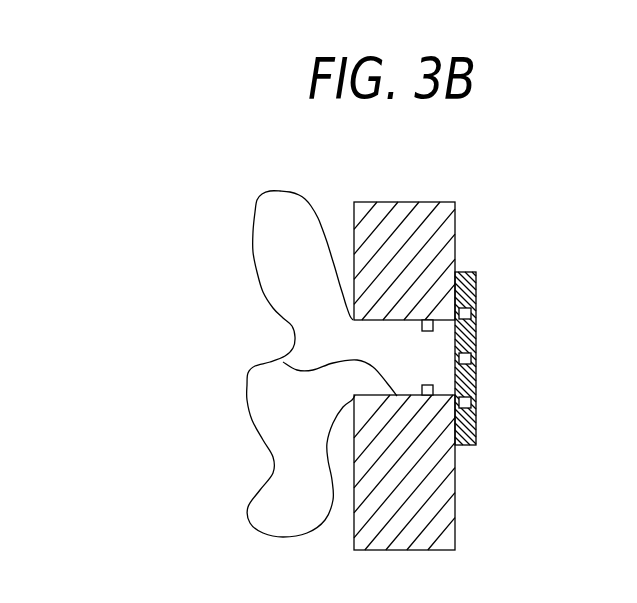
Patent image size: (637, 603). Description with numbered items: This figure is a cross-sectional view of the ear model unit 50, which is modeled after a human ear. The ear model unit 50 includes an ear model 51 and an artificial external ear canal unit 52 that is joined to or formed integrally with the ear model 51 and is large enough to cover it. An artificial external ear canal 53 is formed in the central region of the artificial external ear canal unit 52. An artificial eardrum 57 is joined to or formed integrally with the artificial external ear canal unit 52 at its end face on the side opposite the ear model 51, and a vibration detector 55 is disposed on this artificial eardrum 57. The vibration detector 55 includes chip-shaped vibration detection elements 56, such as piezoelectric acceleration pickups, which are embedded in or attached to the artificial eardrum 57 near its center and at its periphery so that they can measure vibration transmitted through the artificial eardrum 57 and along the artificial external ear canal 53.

The ear model unit 50 is at (450, 185).
The ear model 51 is at (252, 233).
The artificial external ear canal unit 52 is at (456, 217).
The artificial external ear canal 53 is at (285, 363).
The vibration detector 55 is at (495, 383).
The vibration detection element 56 is at (471, 313).
The artificial eardrum 57 is at (476, 277).